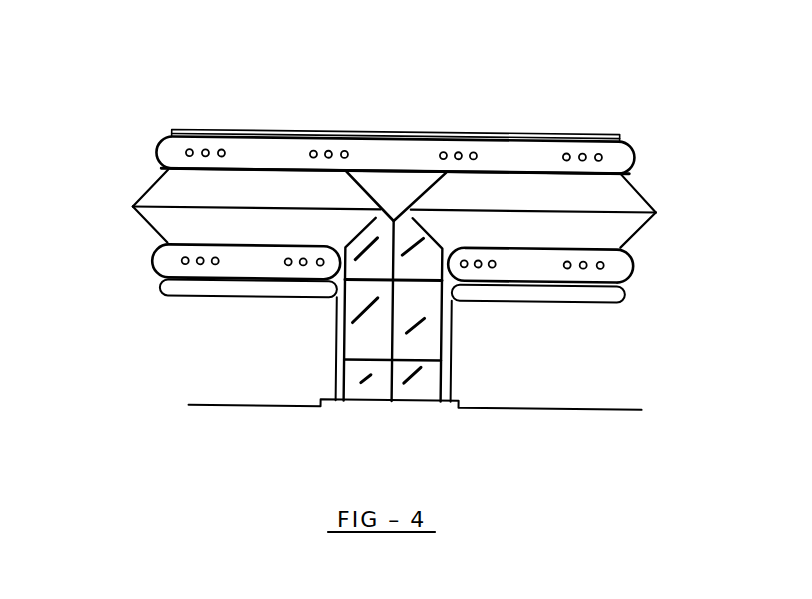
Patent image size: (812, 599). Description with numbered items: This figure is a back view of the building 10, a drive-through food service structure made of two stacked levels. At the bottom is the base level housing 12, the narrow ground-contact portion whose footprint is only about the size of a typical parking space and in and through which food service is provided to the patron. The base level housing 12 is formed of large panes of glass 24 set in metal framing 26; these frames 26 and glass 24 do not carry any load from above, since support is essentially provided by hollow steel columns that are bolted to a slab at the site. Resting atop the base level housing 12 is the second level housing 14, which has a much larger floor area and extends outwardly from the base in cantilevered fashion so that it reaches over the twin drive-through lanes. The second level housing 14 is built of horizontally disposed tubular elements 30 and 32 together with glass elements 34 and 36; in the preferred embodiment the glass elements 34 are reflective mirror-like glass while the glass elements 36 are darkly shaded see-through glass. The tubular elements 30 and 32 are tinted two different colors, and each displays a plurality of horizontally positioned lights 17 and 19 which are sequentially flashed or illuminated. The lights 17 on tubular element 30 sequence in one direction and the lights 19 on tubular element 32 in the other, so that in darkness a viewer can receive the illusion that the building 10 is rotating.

The building 10 is at (523, 113).
The base level housing 12 is at (475, 372).
The second level housing 14 is at (682, 203).
The horizontally positioned lights 17 is at (188, 152).
The horizontally positioned lights 19 is at (185, 262).
The panes of glass 24 is at (370, 330).
The metal framing 26 is at (387, 347).
The tubular element 30 is at (610, 157).
The tubular element 32 is at (612, 267).
The glass elements 34 is at (193, 187).
The glass elements 36 is at (193, 235).